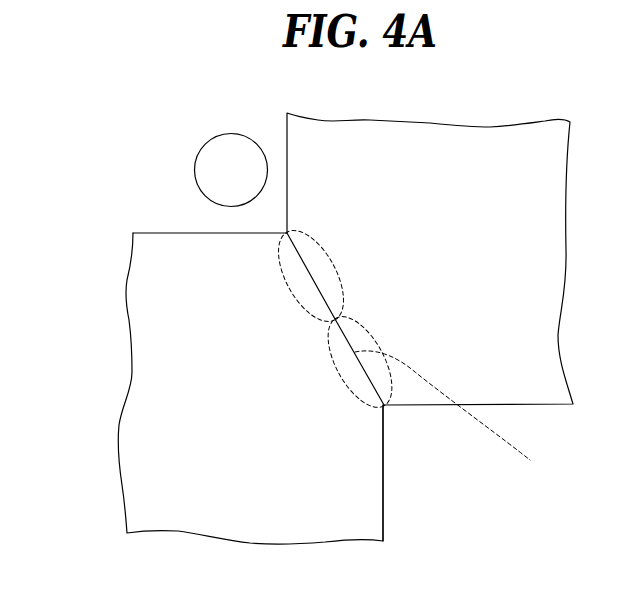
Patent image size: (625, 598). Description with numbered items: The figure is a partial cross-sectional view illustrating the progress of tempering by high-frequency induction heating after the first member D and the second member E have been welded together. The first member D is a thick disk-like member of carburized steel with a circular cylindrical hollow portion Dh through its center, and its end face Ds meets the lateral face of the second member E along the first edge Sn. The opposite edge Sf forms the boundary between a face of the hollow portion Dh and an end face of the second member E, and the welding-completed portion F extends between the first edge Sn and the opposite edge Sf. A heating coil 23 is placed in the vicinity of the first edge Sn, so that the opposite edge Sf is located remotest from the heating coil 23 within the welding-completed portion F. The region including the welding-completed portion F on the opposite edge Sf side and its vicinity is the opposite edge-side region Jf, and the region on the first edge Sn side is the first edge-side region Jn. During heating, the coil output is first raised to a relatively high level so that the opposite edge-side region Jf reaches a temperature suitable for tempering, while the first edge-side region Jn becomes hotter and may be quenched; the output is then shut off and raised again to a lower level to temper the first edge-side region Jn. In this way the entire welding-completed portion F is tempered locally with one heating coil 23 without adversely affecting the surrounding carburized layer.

The second member E is at (283, 136).
The first member D is at (152, 293).
The end face Ds is at (135, 233).
The hollow portion Dh is at (415, 507).
The first edge Sn is at (287, 233).
The opposite edge Sf is at (384, 406).
The heating coil 23 is at (195, 150).
The first edge-side region Jn is at (288, 292).
The opposite edge-side region Jf is at (330, 406).
The welding-completed portion F is at (449, 411).